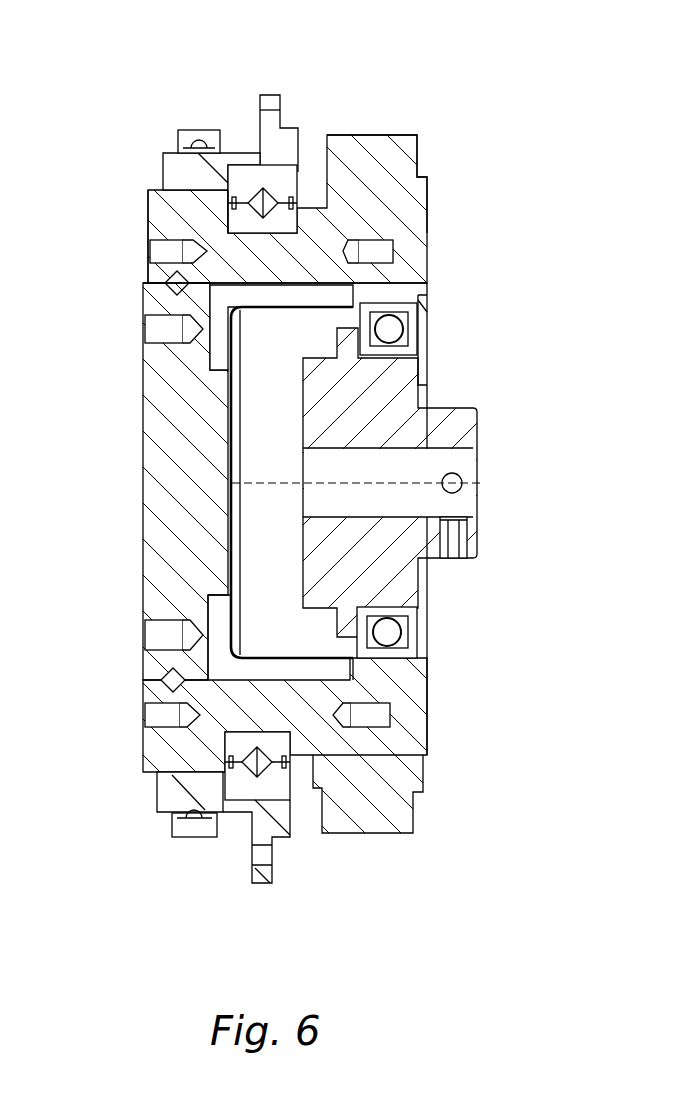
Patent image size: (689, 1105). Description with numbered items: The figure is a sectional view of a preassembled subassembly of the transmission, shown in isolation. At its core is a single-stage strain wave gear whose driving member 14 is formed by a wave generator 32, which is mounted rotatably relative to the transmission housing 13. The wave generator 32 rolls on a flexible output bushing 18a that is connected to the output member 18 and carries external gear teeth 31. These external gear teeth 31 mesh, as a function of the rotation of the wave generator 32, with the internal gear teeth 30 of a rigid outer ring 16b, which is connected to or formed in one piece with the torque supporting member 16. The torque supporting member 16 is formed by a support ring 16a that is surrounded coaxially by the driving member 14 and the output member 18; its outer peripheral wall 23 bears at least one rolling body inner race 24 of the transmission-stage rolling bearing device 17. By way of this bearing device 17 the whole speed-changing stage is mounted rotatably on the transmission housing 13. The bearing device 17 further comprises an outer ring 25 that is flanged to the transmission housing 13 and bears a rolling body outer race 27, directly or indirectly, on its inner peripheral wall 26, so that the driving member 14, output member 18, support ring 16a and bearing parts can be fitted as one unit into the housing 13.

The transmission housing 13 is at (278, 118).
The driving member 14 is at (458, 423).
The torque supporting member 16 is at (320, 258).
The support ring 16a is at (362, 441).
The rigid outer ring 16b is at (408, 293).
The transmission-stage rolling bearing device 17 is at (285, 225).
The output member 18 is at (148, 478).
The flexible output bushing 18a is at (255, 657).
The outer peripheral wall 23 is at (315, 260).
The rolling body inner race 24 is at (230, 223).
The outer ring 25 is at (176, 168).
The inner peripheral wall 26 is at (305, 182).
The rolling body outer race 27 is at (232, 182).
The internal gear teeth 30 is at (423, 308).
The external gear teeth 31 is at (367, 307).
The wave generator 32 is at (393, 338).